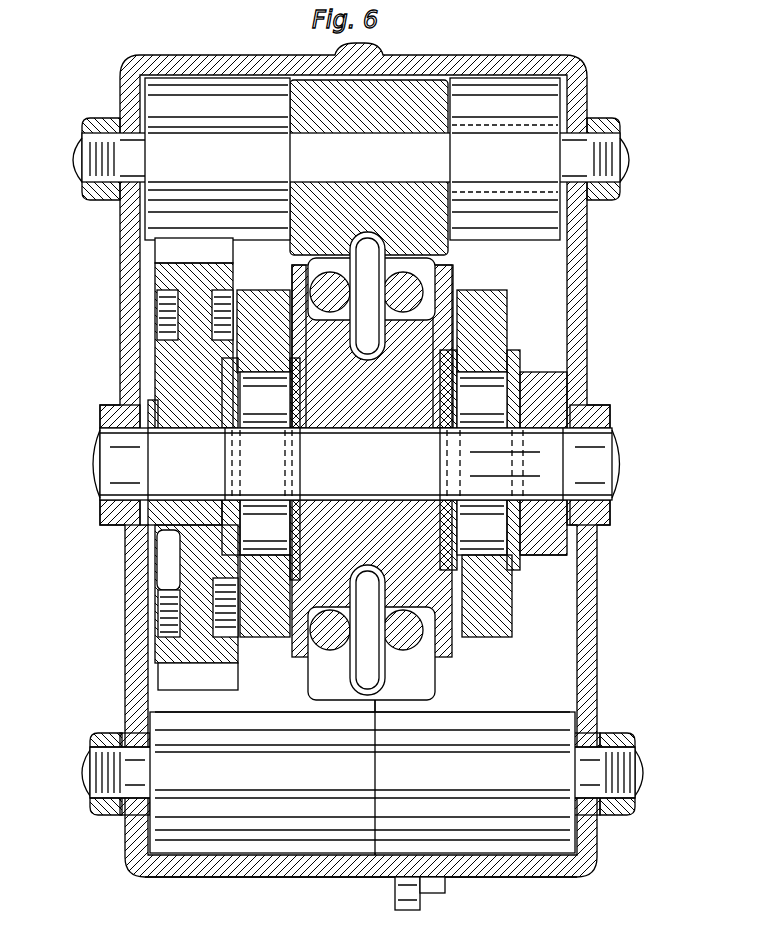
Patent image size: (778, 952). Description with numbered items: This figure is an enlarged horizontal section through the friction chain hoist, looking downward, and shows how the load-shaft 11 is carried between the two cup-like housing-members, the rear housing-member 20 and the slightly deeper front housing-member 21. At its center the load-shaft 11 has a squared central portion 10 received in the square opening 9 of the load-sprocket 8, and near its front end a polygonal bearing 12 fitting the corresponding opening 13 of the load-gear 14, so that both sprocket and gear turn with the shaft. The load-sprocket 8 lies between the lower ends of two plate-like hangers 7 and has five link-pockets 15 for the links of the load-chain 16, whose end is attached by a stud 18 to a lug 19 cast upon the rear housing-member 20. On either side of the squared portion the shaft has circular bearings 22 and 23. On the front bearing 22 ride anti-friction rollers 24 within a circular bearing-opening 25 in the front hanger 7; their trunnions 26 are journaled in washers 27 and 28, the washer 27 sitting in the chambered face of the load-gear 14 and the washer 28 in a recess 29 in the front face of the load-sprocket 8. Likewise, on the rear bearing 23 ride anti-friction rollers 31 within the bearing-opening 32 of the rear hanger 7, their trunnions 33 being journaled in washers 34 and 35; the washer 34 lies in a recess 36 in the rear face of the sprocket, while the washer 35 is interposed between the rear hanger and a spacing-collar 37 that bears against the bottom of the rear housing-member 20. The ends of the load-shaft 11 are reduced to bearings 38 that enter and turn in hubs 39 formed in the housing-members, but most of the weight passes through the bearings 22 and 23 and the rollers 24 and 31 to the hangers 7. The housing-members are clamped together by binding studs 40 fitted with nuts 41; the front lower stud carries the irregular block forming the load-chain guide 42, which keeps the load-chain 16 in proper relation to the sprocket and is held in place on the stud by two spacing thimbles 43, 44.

The hangers 7 is at (262, 290).
The load-sprocket 8 is at (455, 276).
The square opening 9 is at (457, 350).
The squared central portion 10 is at (356, 464).
The load-shaft 11 is at (90, 462).
The polygonal bearing 12 is at (202, 464).
The opening 13 is at (173, 525).
The load-gear 14 is at (145, 665).
The link-pockets 15 is at (577, 690).
The load-chain 16 is at (356, 262).
The stud 18 is at (431, 893).
The lug 19 is at (405, 910).
The rear housing-member 20 is at (537, 877).
The front housing-member 21 is at (262, 877).
The front circular bearing 22 is at (266, 464).
The rear circular bearing 23 is at (490, 464).
The anti-friction rollers 24 is at (265, 463).
The circular bearing-opening 25 is at (245, 352).
The trunnions 26 is at (225, 395).
The washer 27 is at (237, 550).
The washer 28 is at (233, 643).
The recess 29 is at (300, 590).
The anti-friction rollers 31 is at (482, 463).
The circular bearing-opening 32 is at (493, 368).
The trunnions 33 is at (520, 403).
The washer 34 is at (462, 575).
The washer 35 is at (522, 572).
The recess 36 is at (233, 527).
The spacing-collar 37 is at (563, 550).
The bearings 38 is at (357, 464).
The hubs 39 is at (100, 414).
The binding studs 40 is at (72, 176).
The nuts 41 is at (80, 133).
The load-chain guide 42 is at (405, 85).
The spacing thimble 43 is at (505, 115).
The spacing thimble 44 is at (200, 118).